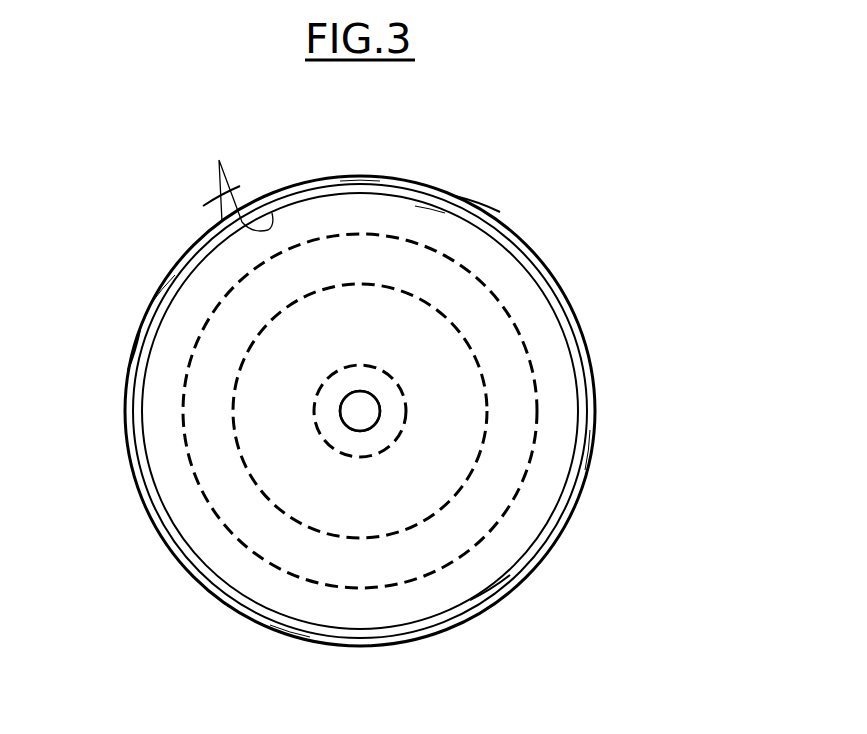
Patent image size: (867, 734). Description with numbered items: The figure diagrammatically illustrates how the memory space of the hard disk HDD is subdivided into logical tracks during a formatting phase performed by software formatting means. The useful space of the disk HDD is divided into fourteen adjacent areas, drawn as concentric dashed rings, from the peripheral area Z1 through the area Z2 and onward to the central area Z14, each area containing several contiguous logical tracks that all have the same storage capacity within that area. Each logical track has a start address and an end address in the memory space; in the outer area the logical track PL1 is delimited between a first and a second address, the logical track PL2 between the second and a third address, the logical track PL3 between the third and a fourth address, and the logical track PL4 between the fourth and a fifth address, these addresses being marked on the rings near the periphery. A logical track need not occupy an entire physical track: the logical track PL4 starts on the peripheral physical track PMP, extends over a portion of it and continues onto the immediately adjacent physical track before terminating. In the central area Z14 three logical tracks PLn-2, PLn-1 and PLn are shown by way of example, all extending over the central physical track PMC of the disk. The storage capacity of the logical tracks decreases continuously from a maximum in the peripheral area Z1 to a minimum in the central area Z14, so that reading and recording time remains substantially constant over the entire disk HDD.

The disk HDD is at (528, 236).
The peripheral physical track PMP is at (570, 305).
The central physical track PMC is at (388, 429).
The area Z1 is at (545, 352).
The area Z2 is at (498, 468).
The central area Z14 is at (333, 446).
The logical track PL1 is at (470, 215).
The logical track PL2 is at (490, 598).
The logical track PL3 is at (130, 383).
The logical track PL4 is at (229, 182).
The logical track PLn is at (347, 403).
The logical track PLn-1 is at (360, 425).
The logical track PLn-2 is at (371, 403).